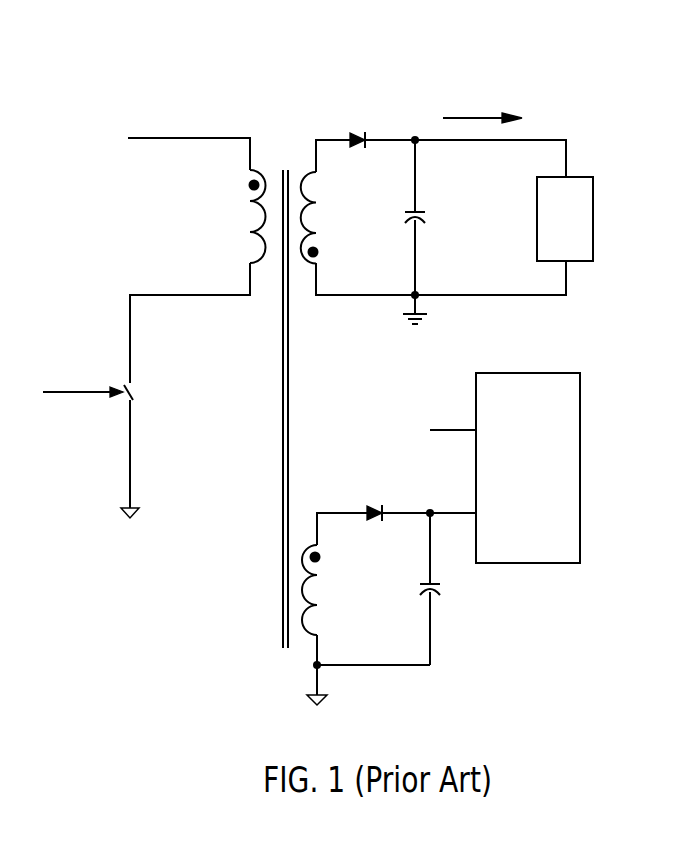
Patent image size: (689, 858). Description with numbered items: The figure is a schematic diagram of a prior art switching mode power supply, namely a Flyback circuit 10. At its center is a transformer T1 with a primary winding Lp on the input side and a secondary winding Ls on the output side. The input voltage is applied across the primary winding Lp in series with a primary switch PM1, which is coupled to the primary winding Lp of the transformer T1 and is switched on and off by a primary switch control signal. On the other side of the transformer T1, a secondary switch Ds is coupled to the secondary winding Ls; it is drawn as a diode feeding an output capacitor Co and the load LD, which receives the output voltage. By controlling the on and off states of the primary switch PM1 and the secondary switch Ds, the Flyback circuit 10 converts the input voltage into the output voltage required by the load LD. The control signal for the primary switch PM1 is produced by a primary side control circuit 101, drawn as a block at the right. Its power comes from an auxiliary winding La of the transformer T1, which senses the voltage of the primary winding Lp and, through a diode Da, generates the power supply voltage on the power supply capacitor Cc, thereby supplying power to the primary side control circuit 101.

The Flyback circuit 10 is at (573, 55).
The primary side control circuit 101 is at (486, 468).
The transformer T1 is at (285, 385).
The primary winding Lp is at (234, 216).
The secondary winding Ls is at (328, 218).
The auxiliary winding La is at (328, 590).
The primary switch PM1 is at (155, 449).
The secondary switch Ds is at (358, 128).
The auxiliary diode Da is at (375, 501).
The output capacitor Co is at (432, 217).
The power supply capacitor Cc is at (449, 589).
The load LD is at (565, 219).